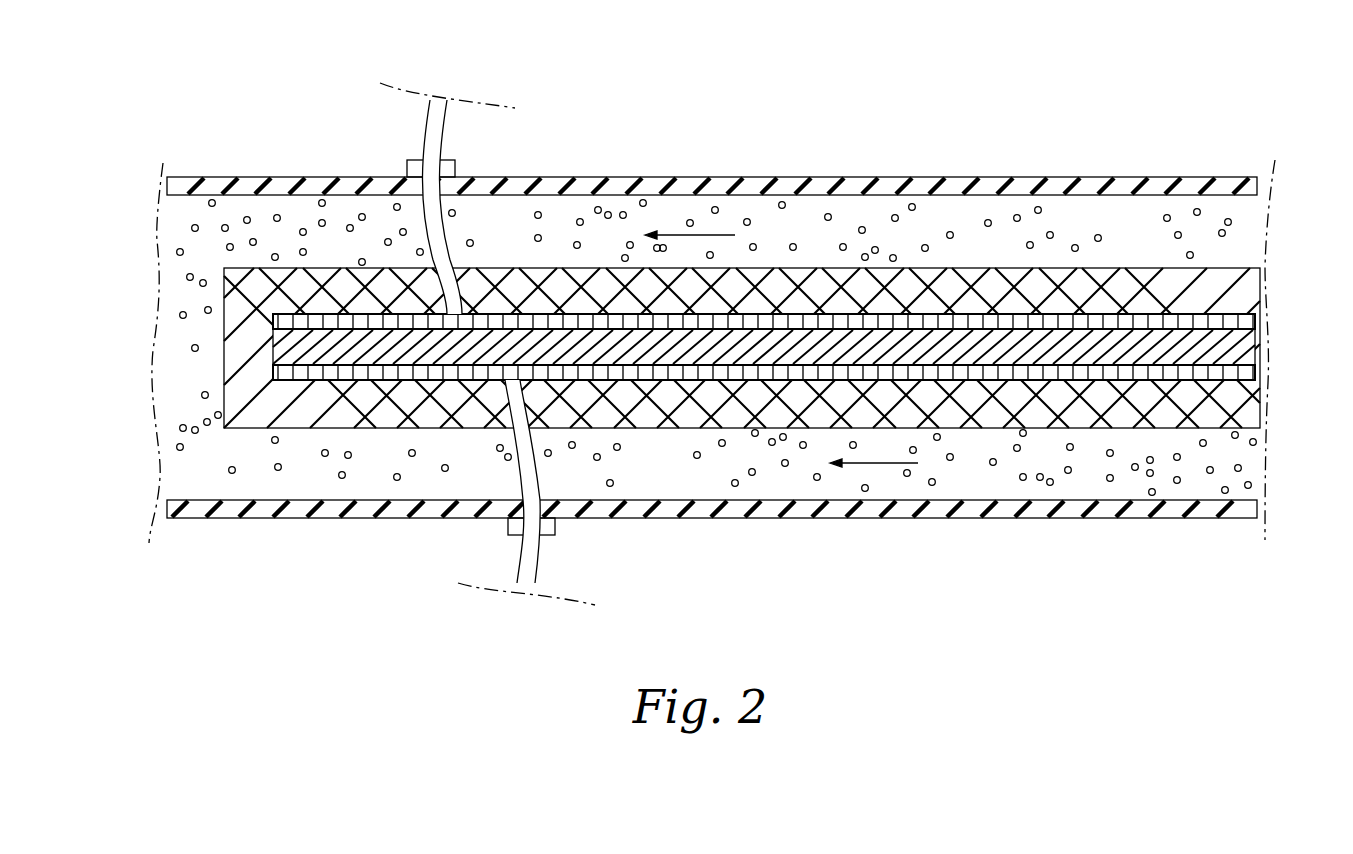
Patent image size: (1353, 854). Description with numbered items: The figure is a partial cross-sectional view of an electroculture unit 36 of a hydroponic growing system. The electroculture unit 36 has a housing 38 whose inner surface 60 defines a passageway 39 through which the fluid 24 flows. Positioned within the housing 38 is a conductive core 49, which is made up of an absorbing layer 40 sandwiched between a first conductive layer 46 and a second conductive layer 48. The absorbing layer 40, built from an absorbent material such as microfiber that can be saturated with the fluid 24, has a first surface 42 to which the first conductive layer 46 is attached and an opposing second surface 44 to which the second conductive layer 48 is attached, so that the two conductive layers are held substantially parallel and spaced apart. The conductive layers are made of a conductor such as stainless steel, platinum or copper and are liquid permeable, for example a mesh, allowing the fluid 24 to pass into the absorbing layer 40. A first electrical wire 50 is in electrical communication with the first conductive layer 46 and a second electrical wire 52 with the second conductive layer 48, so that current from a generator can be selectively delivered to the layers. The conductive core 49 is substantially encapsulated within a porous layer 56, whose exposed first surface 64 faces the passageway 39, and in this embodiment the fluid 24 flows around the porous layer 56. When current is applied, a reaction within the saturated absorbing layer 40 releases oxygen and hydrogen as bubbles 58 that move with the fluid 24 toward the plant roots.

The fluid 24 is at (1143, 212).
The electroculture unit 36 is at (868, 112).
The housing 38 is at (742, 170).
The passageway 39 is at (1247, 228).
The absorbing layer 40 is at (1235, 348).
The first surface 42 is at (1258, 292).
The second surface 44 is at (1232, 364).
The first conductive layer 46 is at (920, 305).
The second conductive layer 48 is at (945, 383).
The conductive core 49 is at (318, 300).
The first electrical wire 50 is at (440, 225).
The second electrical wire 52 is at (535, 475).
The porous layer 56 is at (246, 368).
The bubbles 58 is at (1099, 234).
The inner surface 60 is at (853, 192).
The first surface 64 is at (325, 268).